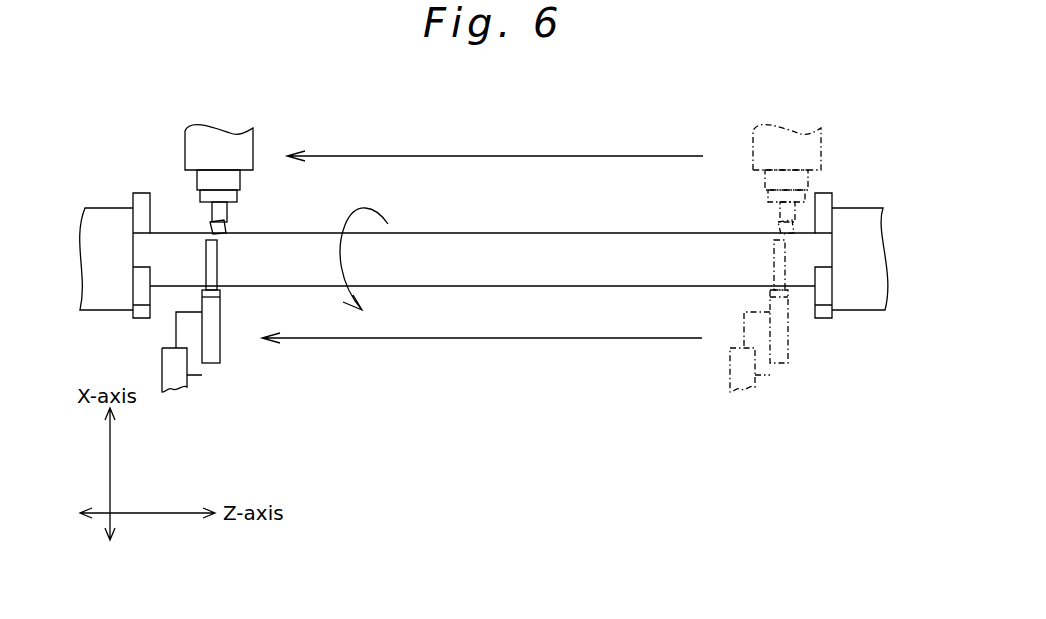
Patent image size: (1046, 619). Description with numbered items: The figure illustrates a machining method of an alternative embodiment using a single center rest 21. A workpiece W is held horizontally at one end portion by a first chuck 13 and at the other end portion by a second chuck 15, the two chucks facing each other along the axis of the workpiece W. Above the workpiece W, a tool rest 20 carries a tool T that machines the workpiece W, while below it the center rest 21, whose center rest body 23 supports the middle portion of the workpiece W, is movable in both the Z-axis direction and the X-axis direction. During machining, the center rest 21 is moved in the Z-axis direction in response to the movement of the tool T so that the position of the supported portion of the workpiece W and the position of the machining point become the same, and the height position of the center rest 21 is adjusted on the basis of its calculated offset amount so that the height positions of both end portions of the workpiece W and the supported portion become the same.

The first chuck 13 is at (107, 213).
The second chuck 15 is at (855, 213).
The workpiece W is at (552, 240).
The tool rest 20 is at (250, 143).
The tool T is at (226, 217).
The center rest body 23 is at (228, 352).
The center rest 21 is at (210, 357).